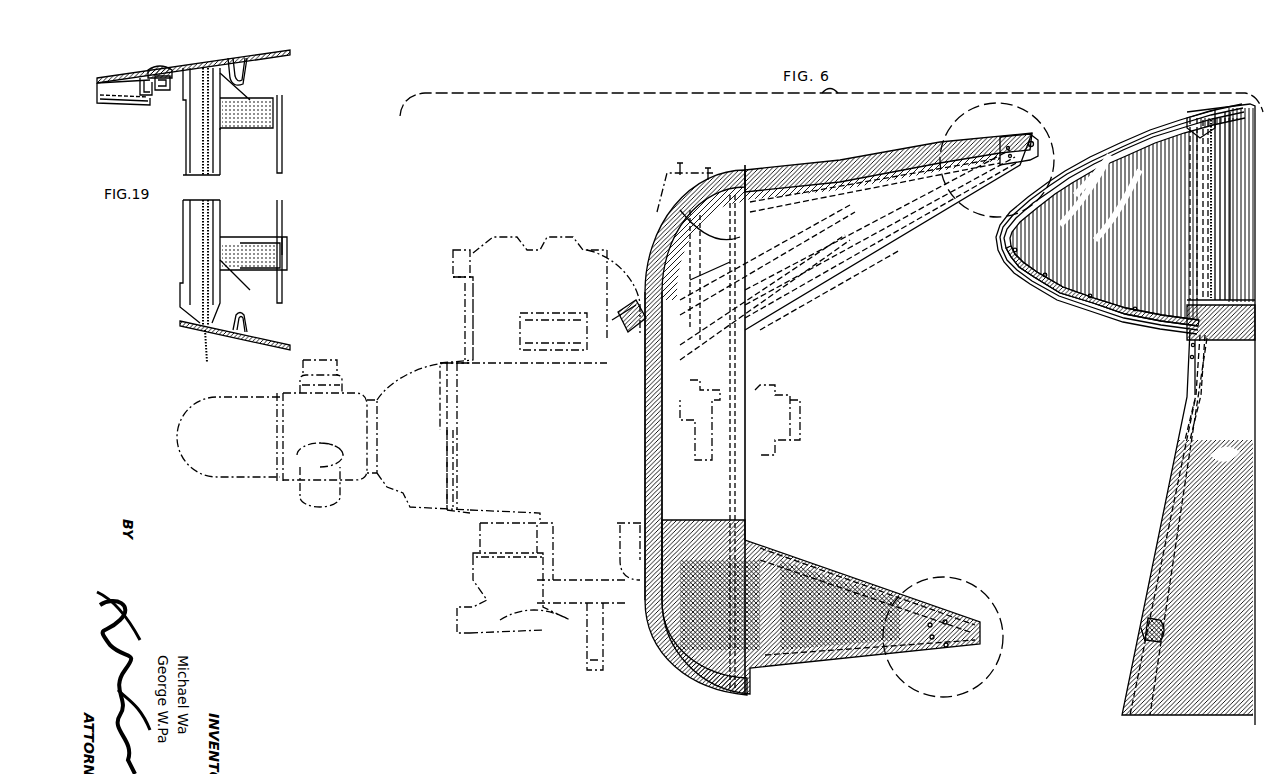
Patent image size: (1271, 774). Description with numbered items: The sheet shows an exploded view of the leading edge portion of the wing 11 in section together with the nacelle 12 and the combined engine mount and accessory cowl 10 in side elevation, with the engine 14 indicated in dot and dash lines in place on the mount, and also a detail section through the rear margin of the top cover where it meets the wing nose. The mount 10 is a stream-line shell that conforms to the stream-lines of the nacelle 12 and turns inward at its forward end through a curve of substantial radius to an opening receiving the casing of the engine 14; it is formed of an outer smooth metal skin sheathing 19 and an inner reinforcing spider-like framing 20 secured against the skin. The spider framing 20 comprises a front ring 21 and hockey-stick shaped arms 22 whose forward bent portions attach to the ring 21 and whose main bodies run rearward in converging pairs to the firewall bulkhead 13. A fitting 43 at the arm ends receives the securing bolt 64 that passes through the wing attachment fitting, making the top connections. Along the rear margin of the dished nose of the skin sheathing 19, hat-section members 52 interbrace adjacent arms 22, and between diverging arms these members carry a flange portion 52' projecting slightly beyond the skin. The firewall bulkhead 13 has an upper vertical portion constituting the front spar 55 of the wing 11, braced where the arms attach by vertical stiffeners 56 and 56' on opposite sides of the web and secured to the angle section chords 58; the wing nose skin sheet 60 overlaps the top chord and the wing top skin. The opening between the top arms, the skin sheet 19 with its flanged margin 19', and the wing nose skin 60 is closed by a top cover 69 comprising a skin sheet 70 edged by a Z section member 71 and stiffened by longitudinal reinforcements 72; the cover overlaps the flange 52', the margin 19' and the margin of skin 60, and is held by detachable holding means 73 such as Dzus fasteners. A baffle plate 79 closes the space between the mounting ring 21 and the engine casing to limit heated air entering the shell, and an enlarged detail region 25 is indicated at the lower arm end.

In FIG. 6, the combined engine mount and accessory cowl 10 is at (740, 482).
In FIG. 6, the wing 11 is at (1106, 140).
In FIG. 6, the nacelle 12 is at (1158, 540).
In FIG. 6, the firewall bulkhead 13 is at (1172, 476).
In FIG. 6, the engine 14 is at (472, 516).
In FIG. 6, the skin sheathing 19 is at (767, 282).
In FIG. 6, the flanged margin of the skin sheet 19' is at (830, 294).
In FIG. 6, the inner reinforcing spider-like framing 20 is at (778, 248).
In FIG. 6, the front ring 21 is at (652, 468).
In FIG. 6, the arms 22 is at (840, 163).
In FIG. 6, the latch detail 25 is at (953, 696).
In FIG. 6, the fitting 43 is at (1012, 152).
In FIG. 6, the hat-section members 52 is at (734, 408).
In FIG. 6, the flange portion 52' is at (778, 414).
In FIG. 19, the front spar 55 is at (205, 151).
In FIG. 6, the front spar 55 is at (1210, 238).
In FIG. 6, the vertical stiffener 56 is at (1191, 209).
In FIG. 6, the vertical stiffener 56' is at (1183, 209).
In FIG. 6, the angle section chords 58 is at (1210, 118).
In FIG. 19, the wing nose skin sheet 60 is at (232, 56).
In FIG. 6, the wing nose skin sheet 60 is at (1104, 286).
In FIG. 6, the securing bolt 64 is at (1146, 626).
In FIG. 19, the top cover 69 is at (150, 64).
In FIG. 19, the skin sheet 70 is at (114, 76).
In FIG. 19, the Z section member 71 is at (145, 96).
In FIG. 19, the reinforcements 72 is at (108, 103).
In FIG. 19, the holding means 73 is at (161, 91).
In FIG. 6, the baffle plate 79 is at (642, 288).